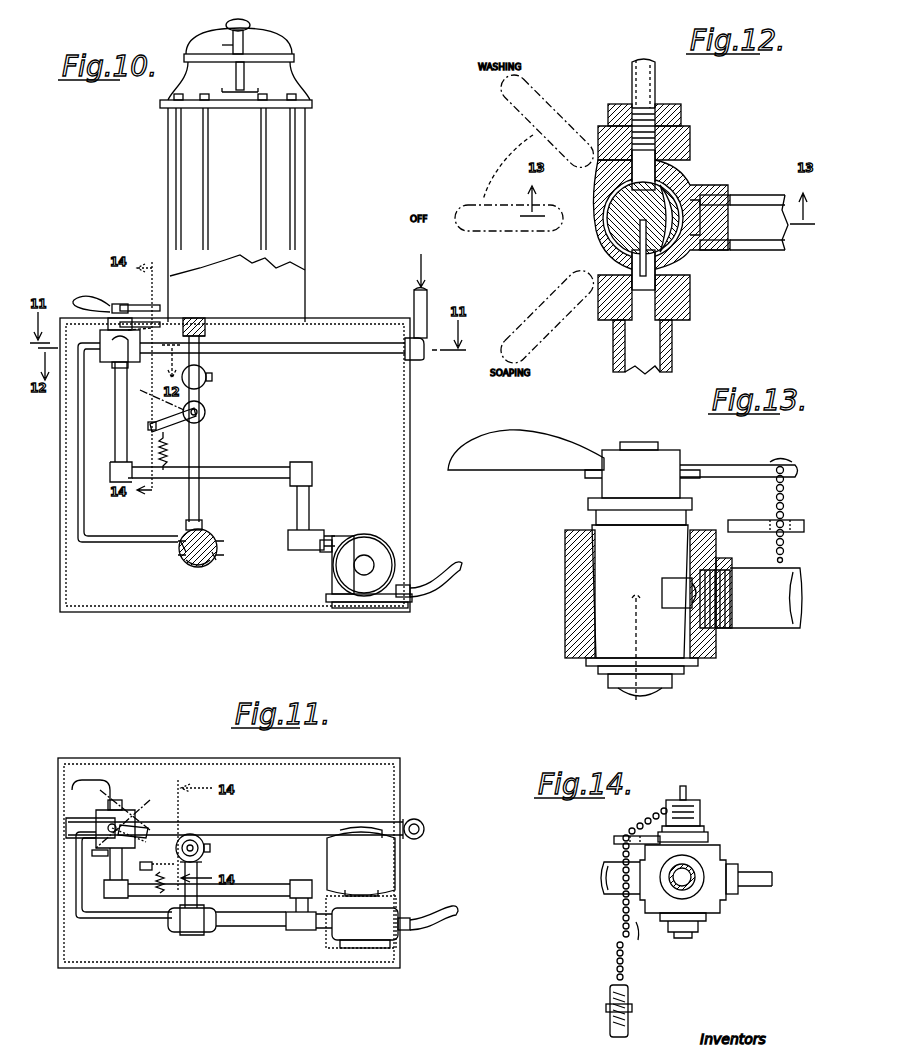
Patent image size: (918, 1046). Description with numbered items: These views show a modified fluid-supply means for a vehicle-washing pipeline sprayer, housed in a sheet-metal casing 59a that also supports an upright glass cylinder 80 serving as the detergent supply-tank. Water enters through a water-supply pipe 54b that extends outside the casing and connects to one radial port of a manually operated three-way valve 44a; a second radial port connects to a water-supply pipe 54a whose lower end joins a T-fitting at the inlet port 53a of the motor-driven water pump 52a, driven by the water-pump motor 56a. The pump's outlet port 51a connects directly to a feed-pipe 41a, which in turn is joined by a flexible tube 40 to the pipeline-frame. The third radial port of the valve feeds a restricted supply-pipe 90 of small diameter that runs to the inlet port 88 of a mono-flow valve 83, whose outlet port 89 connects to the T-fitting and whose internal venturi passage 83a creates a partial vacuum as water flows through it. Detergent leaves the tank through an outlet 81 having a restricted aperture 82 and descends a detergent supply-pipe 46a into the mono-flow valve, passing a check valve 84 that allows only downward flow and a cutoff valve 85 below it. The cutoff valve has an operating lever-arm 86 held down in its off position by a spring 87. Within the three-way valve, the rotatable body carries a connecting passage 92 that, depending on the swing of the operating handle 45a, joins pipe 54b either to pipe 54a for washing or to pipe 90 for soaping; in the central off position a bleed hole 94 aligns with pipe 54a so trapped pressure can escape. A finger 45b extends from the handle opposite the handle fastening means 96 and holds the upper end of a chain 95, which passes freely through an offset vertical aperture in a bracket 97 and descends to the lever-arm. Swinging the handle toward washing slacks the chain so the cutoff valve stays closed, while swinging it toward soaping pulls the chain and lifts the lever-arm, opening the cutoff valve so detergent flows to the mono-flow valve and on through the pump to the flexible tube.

In FIG. 10, the flexible tube 40 is at (462, 568).
In FIG. 11, the flexible tube 40 is at (456, 916).
In FIG. 10, the feed-pipe 41a is at (408, 585).
In FIG. 11, the feed-pipe 41a is at (408, 918).
In FIG. 10, the three-way valve 44a is at (105, 343).
In FIG. 12, the three-way valve 44a is at (578, 245).
In FIG. 13, the three-way valve 44a is at (565, 614).
In FIG. 11, the three-way valve 44a is at (130, 815).
In FIG. 14, the three-way valve 44a is at (718, 856).
In FIG. 10, the operating handle 45a is at (76, 298).
In FIG. 12, the operating handle 45a is at (505, 167).
In FIG. 13, the operating handle 45a is at (533, 446).
In FIG. 11, the operating handle 45a is at (84, 823).
In FIG. 14, the operating handle 45a is at (700, 804).
In FIG. 10, the finger 45b is at (143, 305).
In FIG. 13, the finger 45b is at (728, 464).
In FIG. 11, the finger 45b is at (152, 828).
In FIG. 14, the finger 45b is at (702, 806).
In FIG. 10, the detergent supply-pipe 46a is at (200, 454).
In FIG. 11, the detergent supply-pipe 46a is at (200, 850).
In FIG. 10, the outlet port 51a is at (388, 604).
In FIG. 11, the outlet port 51a is at (394, 940).
In FIG. 10, the water pump 52a is at (355, 596).
In FIG. 11, the water pump 52a is at (364, 948).
In FIG. 10, the inlet port 53a is at (344, 536).
In FIG. 11, the inlet port 53a is at (334, 940).
In FIG. 10, the water-supply pipe 54a is at (112, 432).
In FIG. 12, the water-supply pipe 54a is at (674, 354).
In FIG. 11, the water-supply pipe 54a is at (279, 884).
In FIG. 14, the water-supply pipe 54a is at (608, 896).
In FIG. 10, the water-supply pipe 54b is at (353, 356).
In FIG. 12, the water-supply pipe 54b is at (767, 193).
In FIG. 13, the water-supply pipe 54b is at (772, 630).
In FIG. 11, the water-supply pipe 54b is at (289, 820).
In FIG. 14, the water-supply pipe 54b is at (694, 886).
In FIG. 10, the water-pump motor 56a is at (388, 540).
In FIG. 11, the water-pump motor 56a is at (362, 865).
In FIG. 10, the sheet-metal casing 59a is at (410, 418).
In FIG. 11, the sheet-metal casing 59a is at (166, 970).
In FIG. 10, the glass cylinder 80 is at (306, 280).
In FIG. 10, the outlet 81 is at (198, 318).
In FIG. 10, the restricted aperture 82 is at (206, 332).
In FIG. 10, the mono-flow valve 83 is at (196, 566).
In FIG. 11, the mono-flow valve 83 is at (202, 932).
In FIG. 10, the venturi passage 83a is at (182, 562).
In FIG. 10, the check valve 84 is at (212, 378).
In FIG. 11, the check valve 84 is at (198, 836).
In FIG. 10, the cutoff valve 85 is at (207, 412).
In FIG. 10, the operating lever-arm 86 is at (148, 428).
In FIG. 11, the operating lever-arm 86 is at (142, 870).
In FIG. 14, the operating lever-arm 86 is at (608, 1033).
In FIG. 10, the spring 87 is at (168, 448).
In FIG. 11, the spring 87 is at (172, 878).
In FIG. 10, the inlet port 88 is at (178, 552).
In FIG. 10, the outlet port 89 is at (212, 560).
In FIG. 10, the restricted supply-pipe 90 is at (78, 410).
In FIG. 12, the restricted supply-pipe 90 is at (630, 82).
In FIG. 11, the restricted supply-pipe 90 is at (106, 920).
In FIG. 14, the restricted supply-pipe 90 is at (770, 876).
In FIG. 12, the connecting passage 92 is at (643, 218).
In FIG. 13, the connecting passage 92 is at (674, 578).
In FIG. 12, the bleed hole 94 is at (643, 278).
In FIG. 13, the bleed hole 94 is at (634, 628).
In FIG. 10, the chain 95 is at (150, 378).
In FIG. 13, the chain 95 is at (776, 500).
In FIG. 11, the chain 95 is at (147, 842).
In FIG. 14, the chain 95 is at (624, 965).
In FIG. 10, the handle fastening means 96 is at (116, 304).
In FIG. 13, the handle fastening means 96 is at (641, 442).
In FIG. 11, the handle fastening means 96 is at (118, 800).
In FIG. 10, the bracket 97 is at (160, 328).
In FIG. 13, the bracket 97 is at (746, 533).
In FIG. 11, the bracket 97 is at (102, 856).
In FIG. 14, the bracket 97 is at (614, 840).